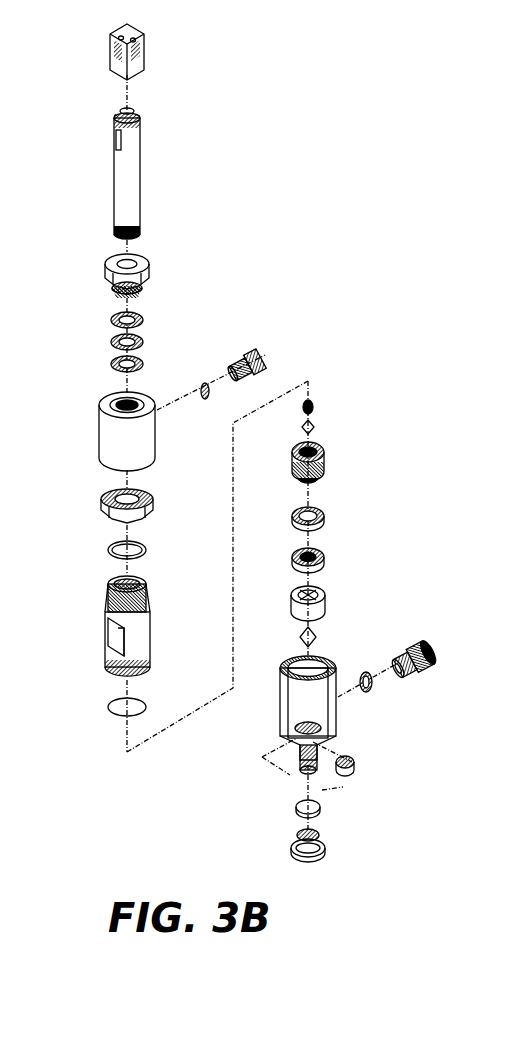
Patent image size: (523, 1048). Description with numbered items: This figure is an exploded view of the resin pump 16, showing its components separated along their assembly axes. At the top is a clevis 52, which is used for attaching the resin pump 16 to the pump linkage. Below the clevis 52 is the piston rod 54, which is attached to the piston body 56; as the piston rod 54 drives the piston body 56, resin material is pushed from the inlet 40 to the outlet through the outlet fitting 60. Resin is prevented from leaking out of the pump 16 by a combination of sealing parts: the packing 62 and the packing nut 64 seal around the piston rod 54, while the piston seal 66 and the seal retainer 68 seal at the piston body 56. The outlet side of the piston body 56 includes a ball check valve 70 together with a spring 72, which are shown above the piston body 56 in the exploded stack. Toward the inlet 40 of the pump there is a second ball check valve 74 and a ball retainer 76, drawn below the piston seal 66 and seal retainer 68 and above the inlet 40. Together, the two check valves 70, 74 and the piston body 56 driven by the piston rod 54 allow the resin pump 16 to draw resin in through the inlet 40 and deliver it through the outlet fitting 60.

The resin pump 16 is at (332, 265).
The inlet 40 is at (426, 668).
The clevis 52 is at (146, 48).
The piston rod 54 is at (113, 198).
The piston body 56 is at (328, 460).
The outlet fitting 60 is at (241, 352).
The packing 62 is at (109, 338).
The packing nut 64 is at (105, 262).
The piston seal 66 is at (329, 514).
The seal retainer 68 is at (329, 557).
The ball check valve 70 is at (316, 428).
The spring 72 is at (314, 399).
The ball check valve 74 is at (318, 637).
The ball retainer 76 is at (330, 603).